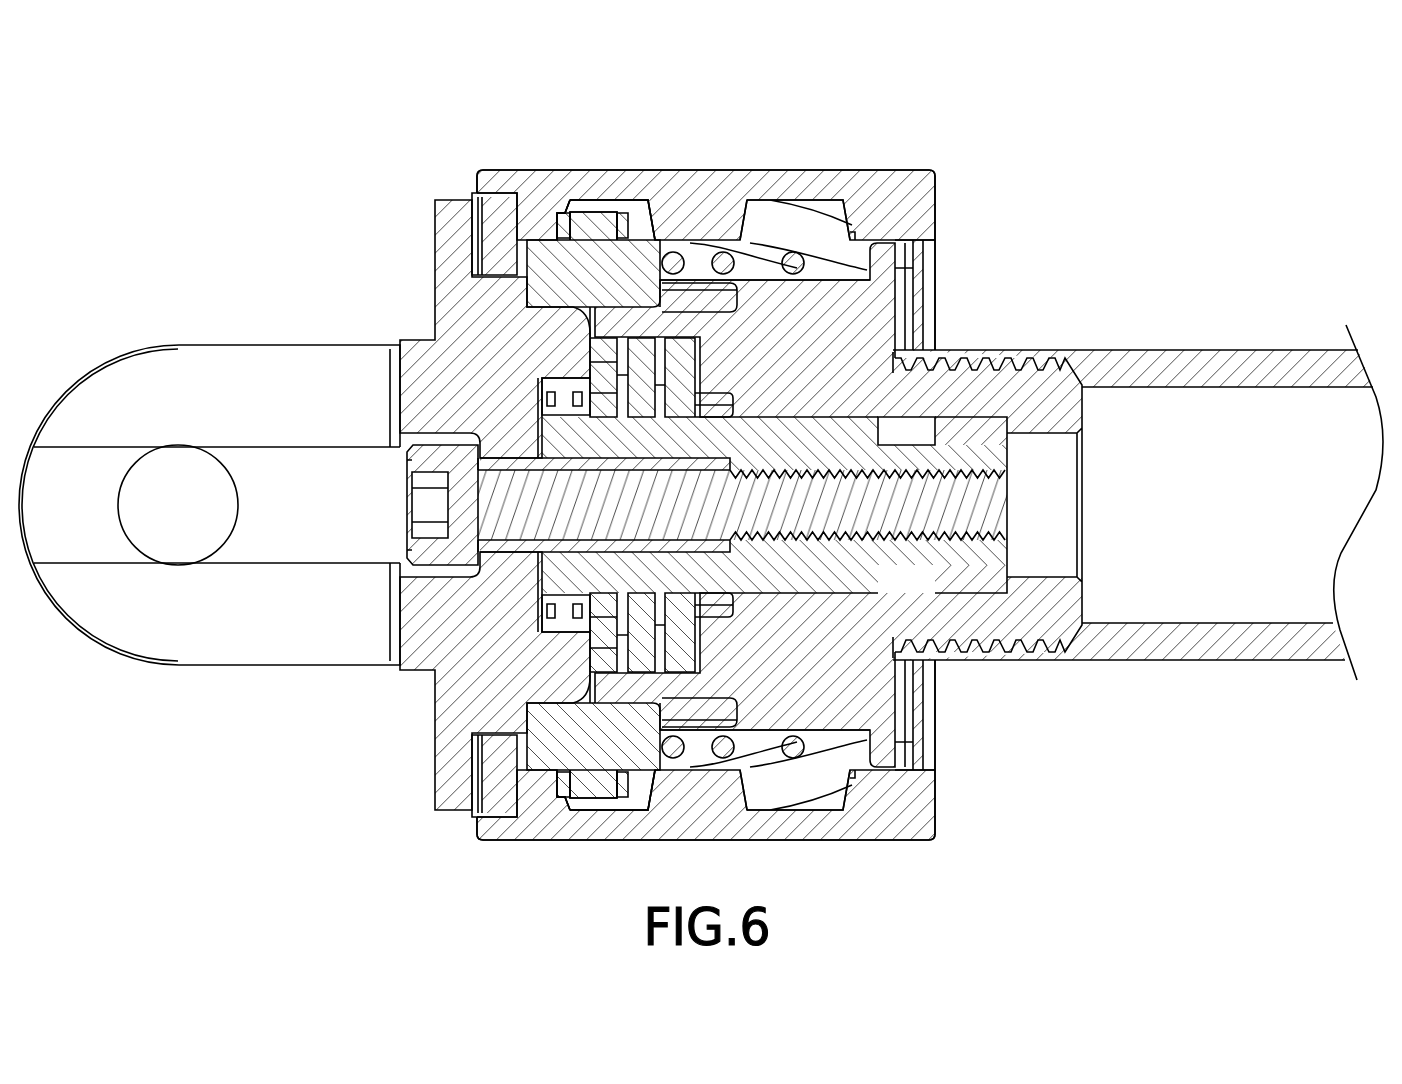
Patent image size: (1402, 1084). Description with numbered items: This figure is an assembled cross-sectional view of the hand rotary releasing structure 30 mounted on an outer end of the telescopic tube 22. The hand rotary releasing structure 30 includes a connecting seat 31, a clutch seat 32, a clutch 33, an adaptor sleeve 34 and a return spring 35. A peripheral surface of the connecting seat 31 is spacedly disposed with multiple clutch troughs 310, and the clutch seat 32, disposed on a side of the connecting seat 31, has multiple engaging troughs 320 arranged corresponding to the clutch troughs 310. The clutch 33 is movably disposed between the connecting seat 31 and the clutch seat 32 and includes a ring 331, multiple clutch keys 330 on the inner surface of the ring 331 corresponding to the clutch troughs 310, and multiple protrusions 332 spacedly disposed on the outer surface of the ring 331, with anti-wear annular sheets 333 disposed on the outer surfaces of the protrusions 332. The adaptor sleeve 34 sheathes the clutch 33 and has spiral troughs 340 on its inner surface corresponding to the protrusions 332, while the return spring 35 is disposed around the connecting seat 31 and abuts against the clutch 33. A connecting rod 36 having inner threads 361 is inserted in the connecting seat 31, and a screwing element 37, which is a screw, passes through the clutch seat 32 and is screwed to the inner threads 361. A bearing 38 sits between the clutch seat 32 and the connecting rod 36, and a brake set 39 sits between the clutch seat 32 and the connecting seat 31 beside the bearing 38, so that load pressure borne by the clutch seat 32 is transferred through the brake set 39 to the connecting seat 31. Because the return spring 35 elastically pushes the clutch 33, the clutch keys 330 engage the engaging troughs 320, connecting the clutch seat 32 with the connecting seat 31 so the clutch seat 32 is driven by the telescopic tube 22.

The telescopic tube 22 is at (1197, 357).
The hand rotary releasing structure 30 is at (440, 158).
The connecting seat 31 is at (852, 315).
The clutch seat 32 is at (472, 295).
The clutch 33 is at (597, 213).
The adaptor sleeve 34 is at (788, 173).
The return spring 35 is at (793, 257).
The connecting rod 36 is at (823, 435).
The screwing element 37 is at (510, 515).
The bearing 38 is at (563, 397).
The brake set 39 is at (645, 668).
The clutch troughs 310 is at (698, 297).
The engaging troughs 320 is at (493, 255).
The clutch keys 330 is at (650, 228).
The ring 331 is at (535, 262).
The protrusions 332 is at (565, 222).
The anti-wear annular sheets 333 is at (582, 220).
The spiral troughs 340 is at (628, 295).
The inner threads 361 is at (940, 472).